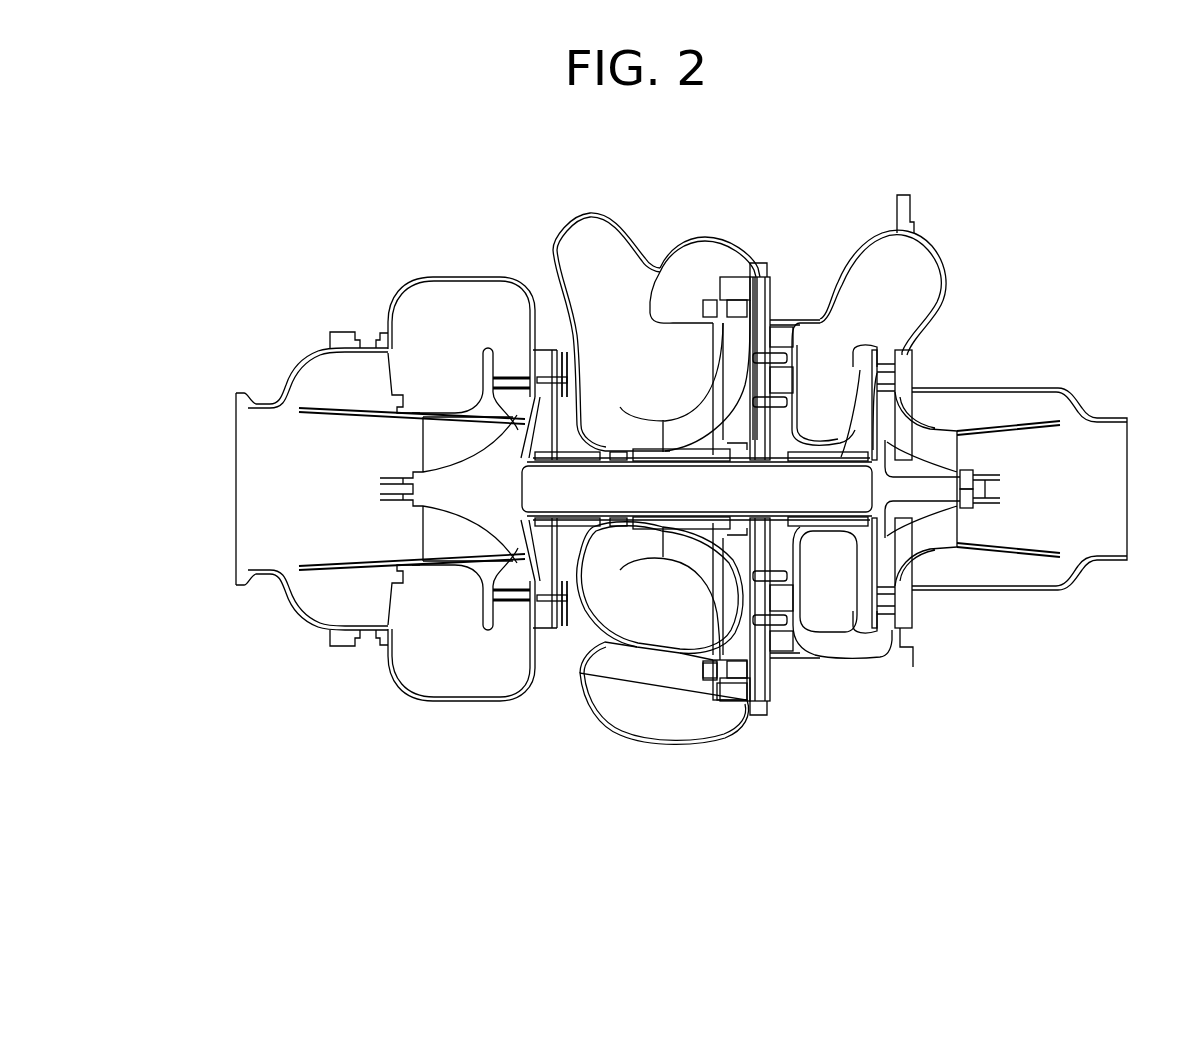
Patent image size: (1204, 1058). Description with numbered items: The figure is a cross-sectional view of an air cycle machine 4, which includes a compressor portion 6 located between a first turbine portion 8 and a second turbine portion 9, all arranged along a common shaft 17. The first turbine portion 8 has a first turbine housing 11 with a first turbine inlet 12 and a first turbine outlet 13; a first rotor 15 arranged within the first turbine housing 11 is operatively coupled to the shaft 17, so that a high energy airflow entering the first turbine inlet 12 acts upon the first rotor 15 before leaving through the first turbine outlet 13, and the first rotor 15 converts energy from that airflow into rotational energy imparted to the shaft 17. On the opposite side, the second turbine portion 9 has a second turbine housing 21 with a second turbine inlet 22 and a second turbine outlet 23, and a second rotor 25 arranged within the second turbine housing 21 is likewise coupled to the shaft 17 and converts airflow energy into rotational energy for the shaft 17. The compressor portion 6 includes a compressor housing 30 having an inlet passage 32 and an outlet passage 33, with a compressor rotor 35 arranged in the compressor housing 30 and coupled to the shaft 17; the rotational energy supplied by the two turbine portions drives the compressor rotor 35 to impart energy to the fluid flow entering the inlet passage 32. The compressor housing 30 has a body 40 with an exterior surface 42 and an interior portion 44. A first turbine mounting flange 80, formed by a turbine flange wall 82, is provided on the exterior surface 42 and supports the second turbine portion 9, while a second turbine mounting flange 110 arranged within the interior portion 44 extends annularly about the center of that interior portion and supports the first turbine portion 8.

The air cycle machine 4 is at (497, 172).
The compressor portion 6 is at (652, 226).
The first turbine portion 8 is at (1008, 284).
The second turbine portion 9 is at (278, 310).
The first turbine housing 11 is at (871, 228).
The first turbine inlet 12 is at (912, 270).
The first turbine outlet 13 is at (1098, 556).
The first rotor 15 is at (932, 503).
The shaft 17 is at (717, 495).
The second turbine housing 21 is at (380, 322).
The second turbine inlet 22 is at (430, 300).
The second turbine outlet 23 is at (236, 393).
The second rotor 25 is at (460, 463).
The compressor housing 30 is at (757, 758).
The inlet passage 32 is at (600, 272).
The outlet passage 33 is at (692, 717).
The compressor rotor 35 is at (722, 385).
The body 40 is at (603, 733).
The exterior surface 42 is at (620, 742).
The interior portion 44 is at (675, 377).
The first turbine mounting flange 80 is at (564, 345).
The turbine flange wall 82 is at (568, 620).
The second turbine mounting flange 110 is at (758, 688).